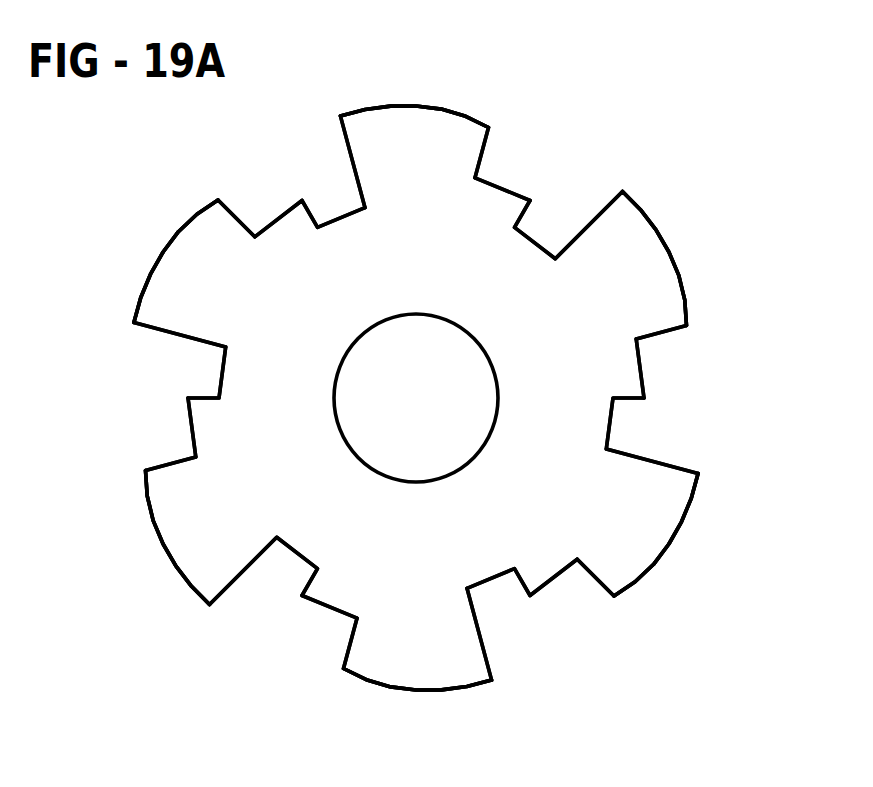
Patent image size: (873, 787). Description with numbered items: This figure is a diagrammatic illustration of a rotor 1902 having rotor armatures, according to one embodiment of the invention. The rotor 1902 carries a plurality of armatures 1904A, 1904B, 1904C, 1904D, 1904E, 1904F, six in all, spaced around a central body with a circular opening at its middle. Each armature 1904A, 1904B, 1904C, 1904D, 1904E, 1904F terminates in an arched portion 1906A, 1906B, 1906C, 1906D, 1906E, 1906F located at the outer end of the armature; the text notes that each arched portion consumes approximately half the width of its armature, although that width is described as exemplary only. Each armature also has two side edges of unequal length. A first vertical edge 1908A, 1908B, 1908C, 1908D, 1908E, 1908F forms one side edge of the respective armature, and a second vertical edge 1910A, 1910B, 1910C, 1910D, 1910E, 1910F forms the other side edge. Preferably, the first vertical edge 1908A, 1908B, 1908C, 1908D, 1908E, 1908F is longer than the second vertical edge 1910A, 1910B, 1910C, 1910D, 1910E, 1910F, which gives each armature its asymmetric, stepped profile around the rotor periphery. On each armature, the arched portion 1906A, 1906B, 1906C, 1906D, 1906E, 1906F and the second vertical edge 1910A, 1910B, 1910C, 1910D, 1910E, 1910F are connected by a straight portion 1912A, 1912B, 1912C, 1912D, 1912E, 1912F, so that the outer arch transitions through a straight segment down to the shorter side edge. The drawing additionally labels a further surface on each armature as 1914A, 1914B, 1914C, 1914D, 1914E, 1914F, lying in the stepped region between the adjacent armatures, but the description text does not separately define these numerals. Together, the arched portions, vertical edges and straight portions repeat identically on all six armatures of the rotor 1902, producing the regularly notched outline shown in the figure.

The rotor 1902 is at (590, 215).
The armature 1904A is at (627, 260).
The armature 1904B is at (622, 488).
The armature 1904C is at (405, 632).
The armature 1904D is at (203, 525).
The armature 1904E is at (215, 265).
The armature 1904F is at (407, 140).
The arched portion 1906A is at (673, 242).
The arched portion 1906B is at (668, 522).
The arched portion 1906C is at (430, 692).
The arched portion 1906D is at (145, 503).
The arched portion 1906E is at (155, 265).
The arched portion 1906F is at (445, 106).
The first vertical edge 1908A is at (622, 190).
The first vertical edge 1908B is at (635, 452).
The first vertical edge 1908C is at (483, 633).
The first vertical edge 1908D is at (243, 573).
The first vertical edge 1908E is at (177, 338).
The first vertical edge 1908F is at (353, 167).
The second vertical edge 1910A is at (643, 375).
The second vertical edge 1910B is at (617, 598).
The second vertical edge 1910C is at (350, 648).
The second vertical edge 1910D is at (160, 467).
The second vertical edge 1910E is at (232, 210).
The second vertical edge 1910F is at (493, 178).
The straight portion 1912A is at (620, 403).
The straight portion 1912B is at (518, 585).
The straight portion 1912C is at (308, 582).
The straight portion 1912D is at (203, 397).
The straight portion 1912E is at (308, 205).
The straight portion 1912F is at (540, 242).
The outer step surface 1914A is at (683, 327).
The outer step surface 1914B is at (595, 578).
The outer step surface 1914C is at (338, 618).
The outer step surface 1914D is at (191, 429).
The outer step surface 1914E is at (272, 210).
The outer step surface 1914F is at (517, 222).